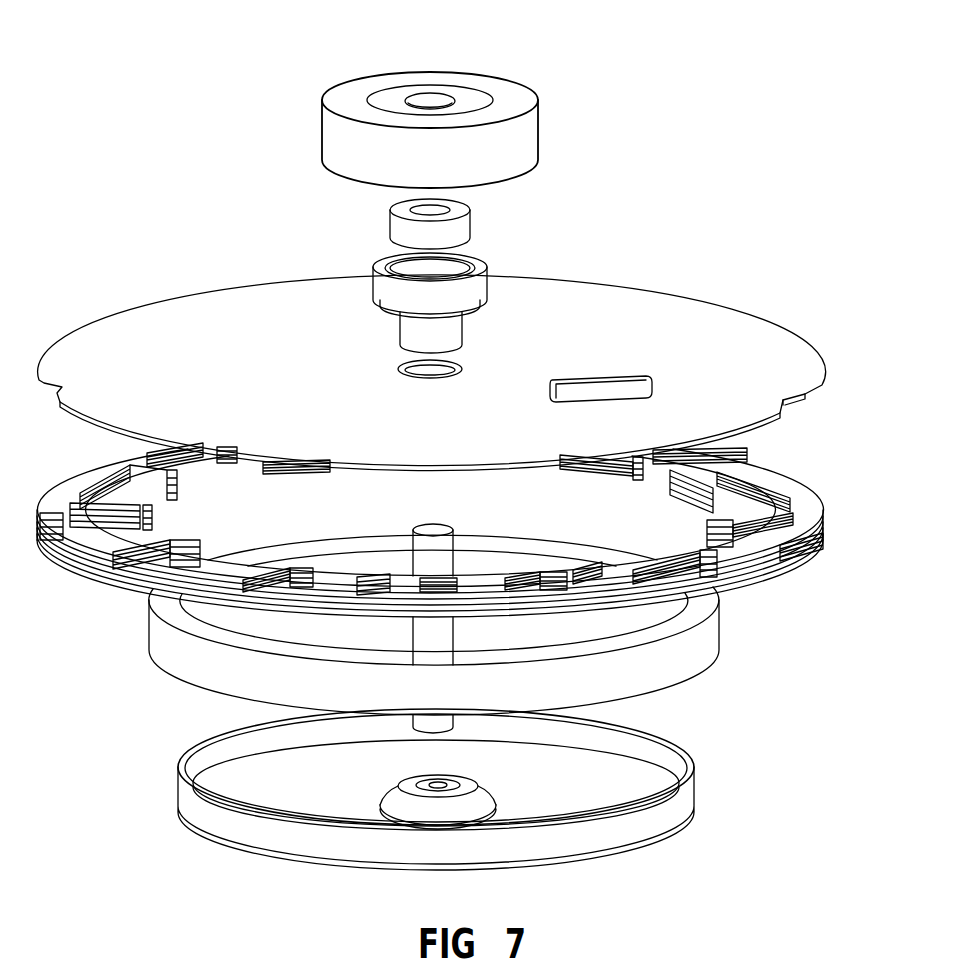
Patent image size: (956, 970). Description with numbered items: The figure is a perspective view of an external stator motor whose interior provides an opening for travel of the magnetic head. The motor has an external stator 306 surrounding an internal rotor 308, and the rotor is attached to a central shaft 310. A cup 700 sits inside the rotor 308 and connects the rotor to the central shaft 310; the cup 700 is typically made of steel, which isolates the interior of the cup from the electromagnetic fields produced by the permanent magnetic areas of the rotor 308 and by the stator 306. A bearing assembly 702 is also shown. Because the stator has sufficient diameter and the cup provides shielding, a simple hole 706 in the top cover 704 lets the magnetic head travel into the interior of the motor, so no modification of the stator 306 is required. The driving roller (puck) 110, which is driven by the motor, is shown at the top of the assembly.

The driving roller (puck) 110 is at (444, 68).
The bearing assembly 702 is at (472, 262).
The top cover 704 is at (650, 287).
The hole 706 is at (607, 377).
The external stator 306 is at (793, 468).
The central shaft 310 is at (435, 522).
The internal rotor 308 is at (718, 650).
The cup 700 is at (693, 800).